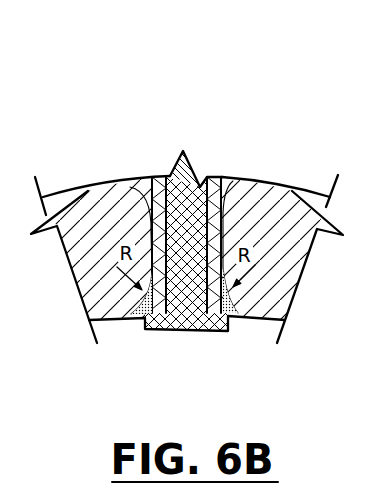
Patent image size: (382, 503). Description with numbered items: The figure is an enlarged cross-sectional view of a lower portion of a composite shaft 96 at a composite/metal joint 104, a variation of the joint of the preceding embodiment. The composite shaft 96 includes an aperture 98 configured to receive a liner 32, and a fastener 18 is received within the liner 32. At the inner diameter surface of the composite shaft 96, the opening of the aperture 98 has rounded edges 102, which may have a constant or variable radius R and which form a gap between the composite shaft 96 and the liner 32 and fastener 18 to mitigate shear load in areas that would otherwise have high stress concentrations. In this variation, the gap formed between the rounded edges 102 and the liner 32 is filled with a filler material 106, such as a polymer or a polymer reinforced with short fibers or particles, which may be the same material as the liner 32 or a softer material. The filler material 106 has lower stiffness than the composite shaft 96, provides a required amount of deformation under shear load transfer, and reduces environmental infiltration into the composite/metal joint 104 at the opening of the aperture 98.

The composite/metal joint 104 is at (137, 100).
The aperture 98 is at (163, 178).
The composite shaft 96 is at (267, 203).
The fastener 18 is at (199, 259).
The liner 32 is at (213, 177).
The rounded edges 102 is at (168, 329).
The filler material 106 is at (220, 332).